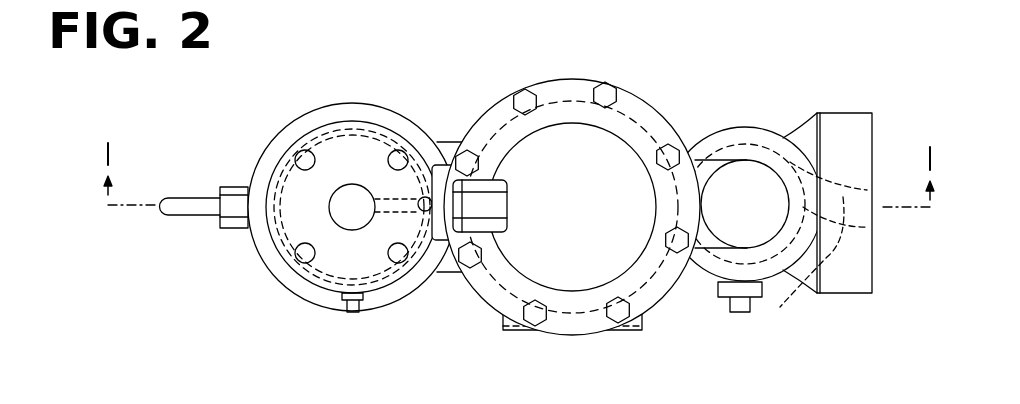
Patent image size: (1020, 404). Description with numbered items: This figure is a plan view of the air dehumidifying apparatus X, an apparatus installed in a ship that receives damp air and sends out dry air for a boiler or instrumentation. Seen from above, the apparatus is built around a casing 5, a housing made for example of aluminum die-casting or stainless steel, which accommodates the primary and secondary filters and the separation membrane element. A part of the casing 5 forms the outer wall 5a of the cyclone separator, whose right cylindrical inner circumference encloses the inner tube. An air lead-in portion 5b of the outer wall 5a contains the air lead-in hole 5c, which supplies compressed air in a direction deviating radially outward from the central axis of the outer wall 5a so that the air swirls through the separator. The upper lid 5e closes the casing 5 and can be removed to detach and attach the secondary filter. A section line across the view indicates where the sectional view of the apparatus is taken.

The casing 5 is at (712, 280).
The outer wall 5a is at (272, 263).
The air lead-in portion 5b is at (848, 285).
The air lead-in hole 5c is at (780, 307).
The upper lid 5e is at (478, 300).
The air dehumidifying apparatus X is at (648, 68).